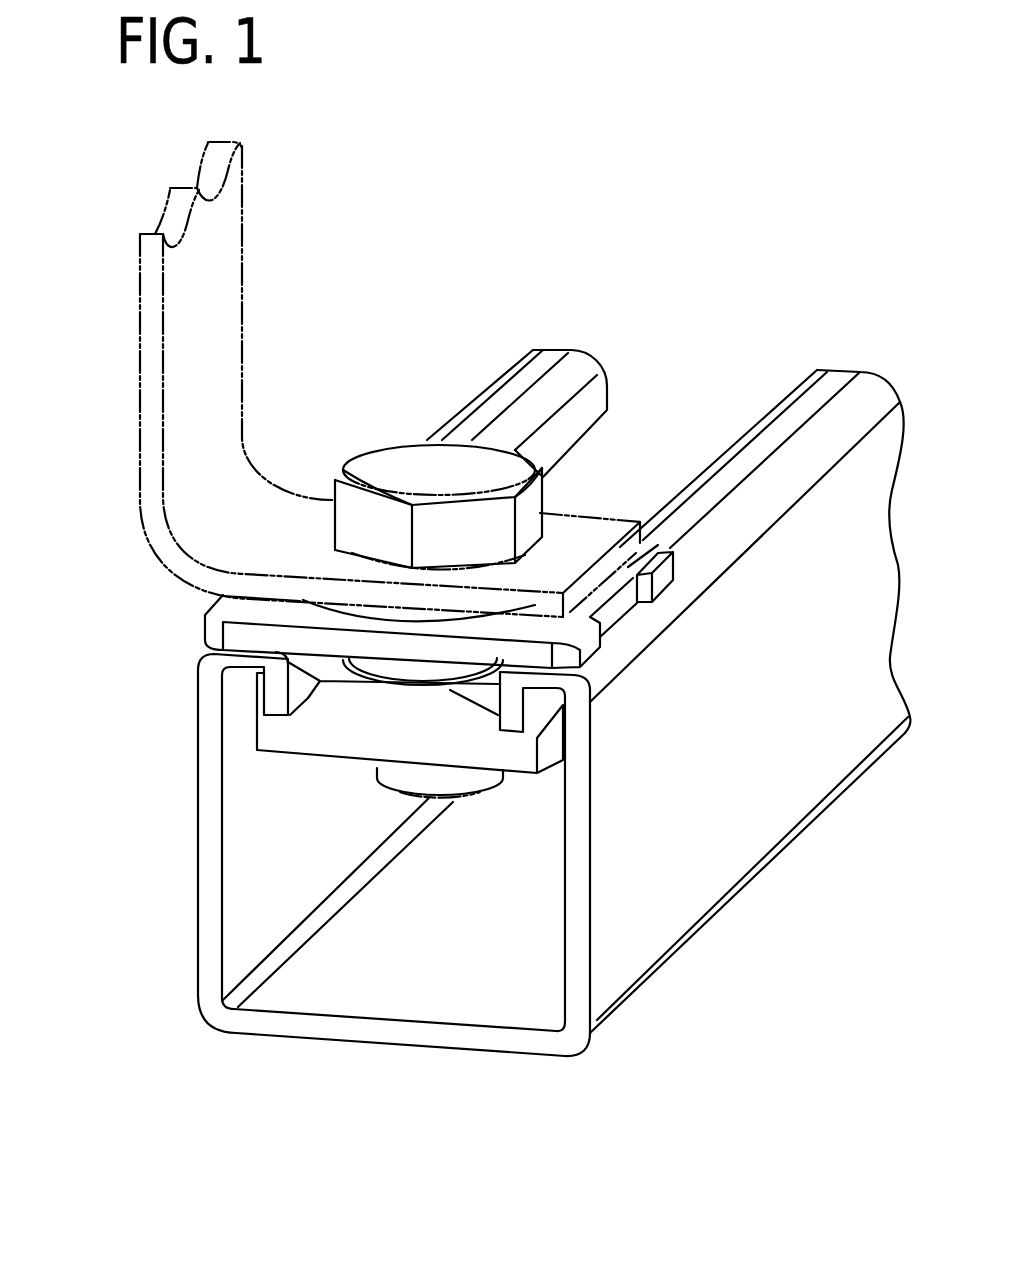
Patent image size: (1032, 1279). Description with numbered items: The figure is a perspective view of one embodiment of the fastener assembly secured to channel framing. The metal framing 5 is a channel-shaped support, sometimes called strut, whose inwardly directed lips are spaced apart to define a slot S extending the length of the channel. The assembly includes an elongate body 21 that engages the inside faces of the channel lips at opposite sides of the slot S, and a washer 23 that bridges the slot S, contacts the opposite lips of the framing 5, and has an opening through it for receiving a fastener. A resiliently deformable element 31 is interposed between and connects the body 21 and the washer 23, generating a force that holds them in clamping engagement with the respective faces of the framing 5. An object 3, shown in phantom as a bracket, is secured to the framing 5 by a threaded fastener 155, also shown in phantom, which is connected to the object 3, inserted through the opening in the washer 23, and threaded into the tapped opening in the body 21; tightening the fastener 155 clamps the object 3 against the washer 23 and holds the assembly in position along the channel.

The object 3 is at (242, 242).
The threaded fastener 155 is at (410, 455).
The slot S is at (622, 455).
The washer 23 is at (204, 627).
The elongate body 21 is at (283, 755).
The resiliently deformable element 31 is at (389, 676).
The metal framing 5 is at (707, 927).